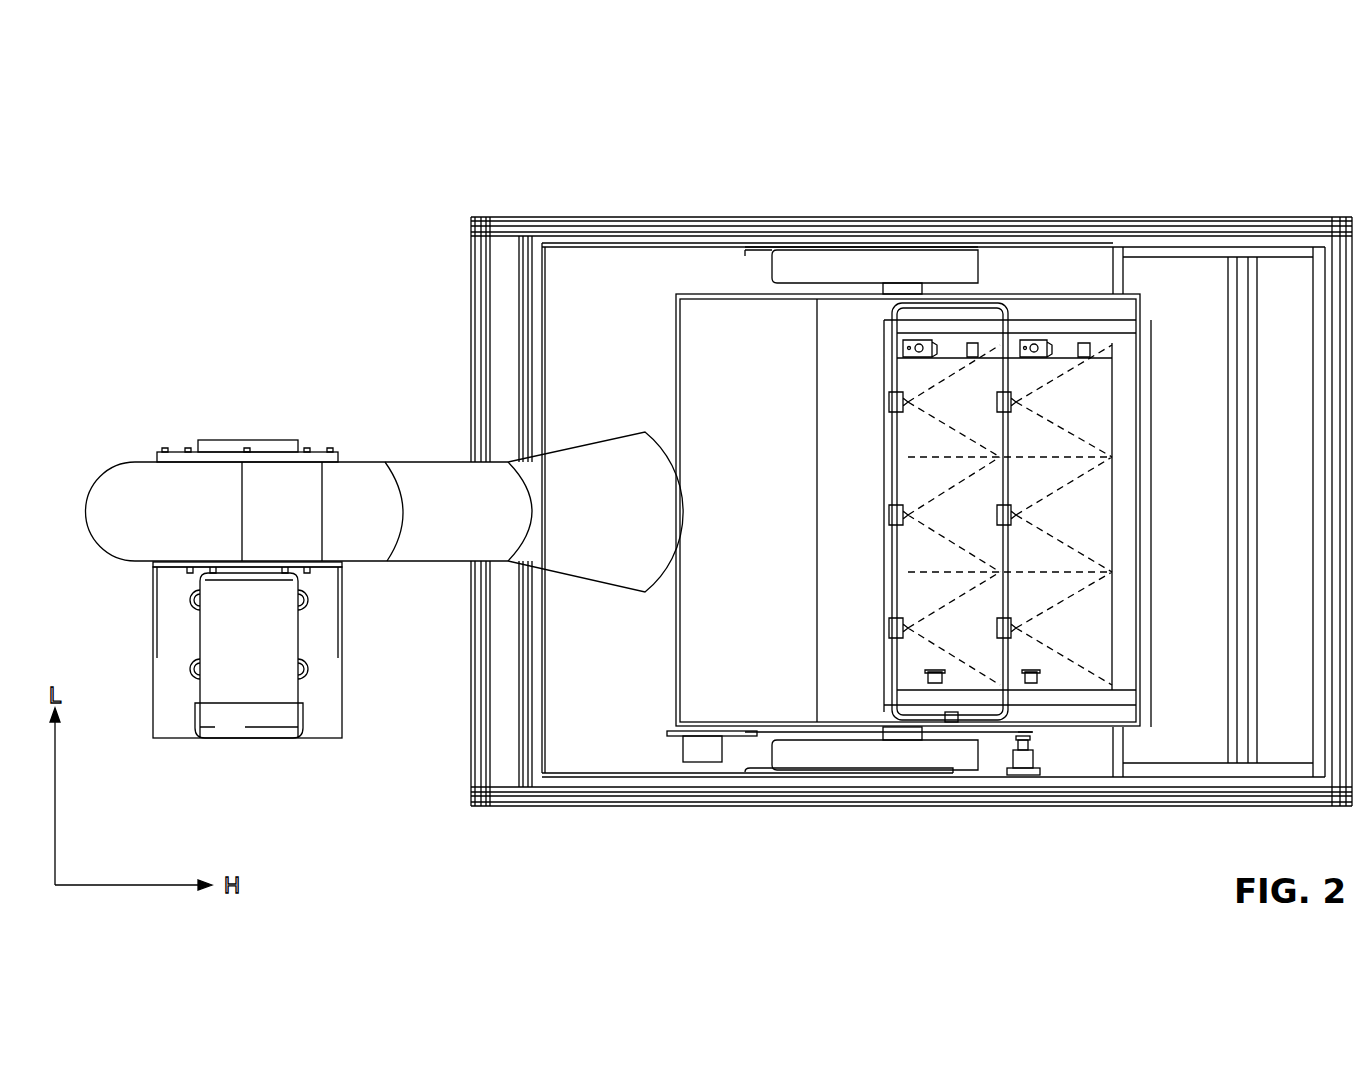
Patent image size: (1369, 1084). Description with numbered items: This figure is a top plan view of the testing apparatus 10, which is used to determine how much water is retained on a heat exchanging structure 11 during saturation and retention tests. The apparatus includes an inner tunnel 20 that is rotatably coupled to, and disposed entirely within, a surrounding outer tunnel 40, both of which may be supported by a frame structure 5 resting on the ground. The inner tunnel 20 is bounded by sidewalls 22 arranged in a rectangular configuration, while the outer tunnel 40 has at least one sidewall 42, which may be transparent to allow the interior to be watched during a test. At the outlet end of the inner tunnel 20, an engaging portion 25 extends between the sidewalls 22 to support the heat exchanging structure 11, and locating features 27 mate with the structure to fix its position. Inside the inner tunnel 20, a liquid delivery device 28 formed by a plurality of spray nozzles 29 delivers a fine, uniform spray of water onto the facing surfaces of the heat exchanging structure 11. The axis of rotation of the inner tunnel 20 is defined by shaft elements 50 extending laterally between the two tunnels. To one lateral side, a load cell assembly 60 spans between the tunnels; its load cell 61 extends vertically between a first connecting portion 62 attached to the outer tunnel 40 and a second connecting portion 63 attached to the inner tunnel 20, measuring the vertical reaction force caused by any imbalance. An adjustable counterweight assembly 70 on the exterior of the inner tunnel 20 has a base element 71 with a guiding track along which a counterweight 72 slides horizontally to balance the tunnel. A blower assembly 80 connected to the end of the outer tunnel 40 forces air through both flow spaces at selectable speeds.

The frame structure 5 is at (1241, 217).
The testing apparatus 10 is at (308, 172).
The heat exchanging structure 11 is at (1100, 403).
The inner tunnel 20 is at (701, 280).
The sidewalls 22 is at (760, 290).
The engaging portion 25 is at (1128, 507).
The locating features 27 is at (1033, 672).
The liquid delivery device 28 is at (866, 436).
The spray nozzles 29 is at (890, 630).
The outer tunnel 40 is at (805, 225).
The sidewall 42 is at (1010, 242).
The shaft elements 50 is at (905, 290).
The load cell assembly 60 is at (1026, 792).
The load cell 61 is at (1032, 740).
The first connecting portion 62 is at (1020, 775).
The second connecting portion 63 is at (1040, 733).
The adjustable counterweight assembly 70 is at (668, 755).
The base element 71 is at (733, 731).
The counterweight 72 is at (699, 763).
The blower assembly 80 is at (243, 425).